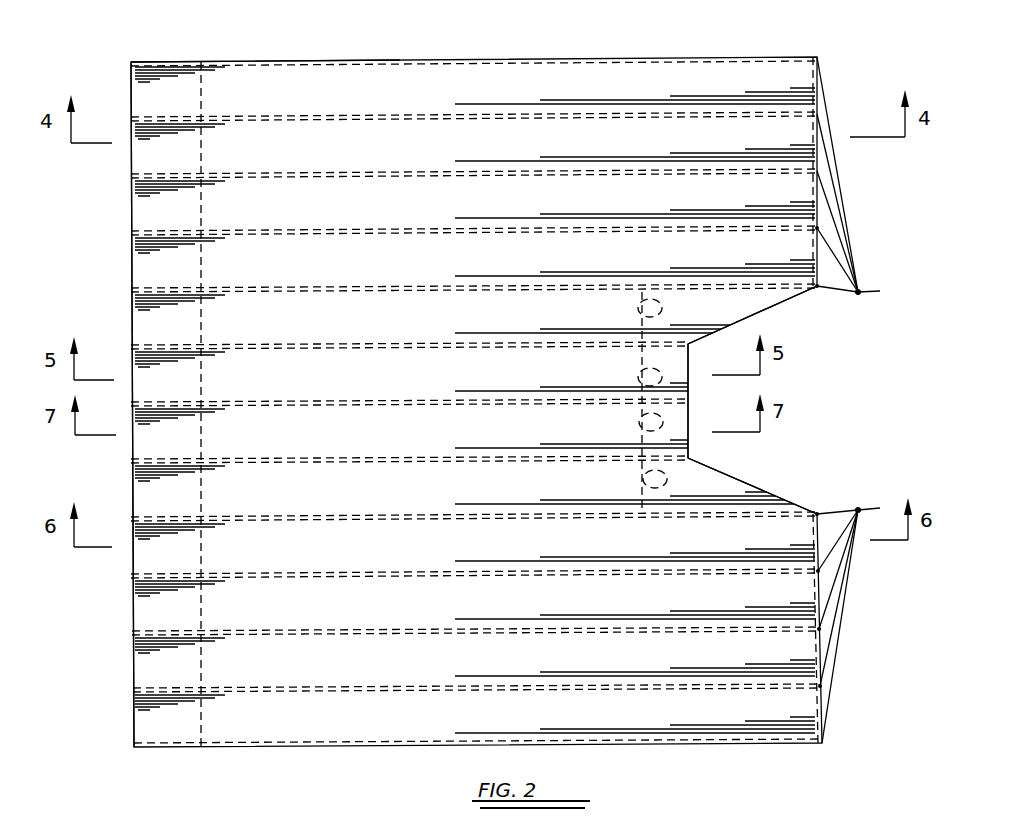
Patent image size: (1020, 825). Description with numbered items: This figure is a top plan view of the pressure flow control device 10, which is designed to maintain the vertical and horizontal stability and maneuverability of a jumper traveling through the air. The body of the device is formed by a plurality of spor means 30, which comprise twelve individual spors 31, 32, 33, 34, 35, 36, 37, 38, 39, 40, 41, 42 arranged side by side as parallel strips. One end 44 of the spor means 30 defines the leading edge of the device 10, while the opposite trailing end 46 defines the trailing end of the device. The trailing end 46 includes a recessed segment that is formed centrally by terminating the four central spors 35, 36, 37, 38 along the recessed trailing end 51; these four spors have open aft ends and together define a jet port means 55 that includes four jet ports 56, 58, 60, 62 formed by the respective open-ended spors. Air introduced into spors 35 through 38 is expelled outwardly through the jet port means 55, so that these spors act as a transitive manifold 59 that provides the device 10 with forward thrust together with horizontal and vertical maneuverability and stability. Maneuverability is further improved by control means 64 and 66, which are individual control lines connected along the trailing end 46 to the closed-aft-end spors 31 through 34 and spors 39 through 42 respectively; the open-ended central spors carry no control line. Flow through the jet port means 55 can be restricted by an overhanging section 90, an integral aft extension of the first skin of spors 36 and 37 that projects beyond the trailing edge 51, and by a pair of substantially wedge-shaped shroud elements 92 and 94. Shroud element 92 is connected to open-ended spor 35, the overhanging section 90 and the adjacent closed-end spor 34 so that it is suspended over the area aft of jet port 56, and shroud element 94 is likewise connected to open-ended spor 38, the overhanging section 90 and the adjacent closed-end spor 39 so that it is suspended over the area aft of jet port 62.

The pressure flow control device 10 is at (424, 54).
The spor means 30 is at (178, 99).
The spor 31 is at (318, 101).
The spor 32 is at (318, 158).
The spor 33 is at (318, 215).
The spor 34 is at (318, 272).
The spor 35 is at (318, 329).
The spor 36 is at (318, 386).
The spor 37 is at (318, 443).
The spor 38 is at (318, 500).
The spor 39 is at (318, 558).
The spor 40 is at (318, 615).
The spor 41 is at (318, 672).
The spor 42 is at (318, 729).
The one end of spor means 44 is at (131, 266).
The trailing end 46 is at (819, 284).
The recessed trailing end 51 is at (690, 452).
The jet port means 55 is at (651, 407).
The jet port 56 is at (638, 308).
The jet port 58 is at (638, 377).
The transitive manifold 59 is at (533, 386).
The jet port 60 is at (638, 422).
The jet port 62 is at (640, 479).
The control means 64 is at (843, 197).
The control means 66 is at (838, 636).
The overhanging section 90 is at (688, 431).
The shroud element 92 is at (778, 310).
The shroud element 94 is at (758, 491).